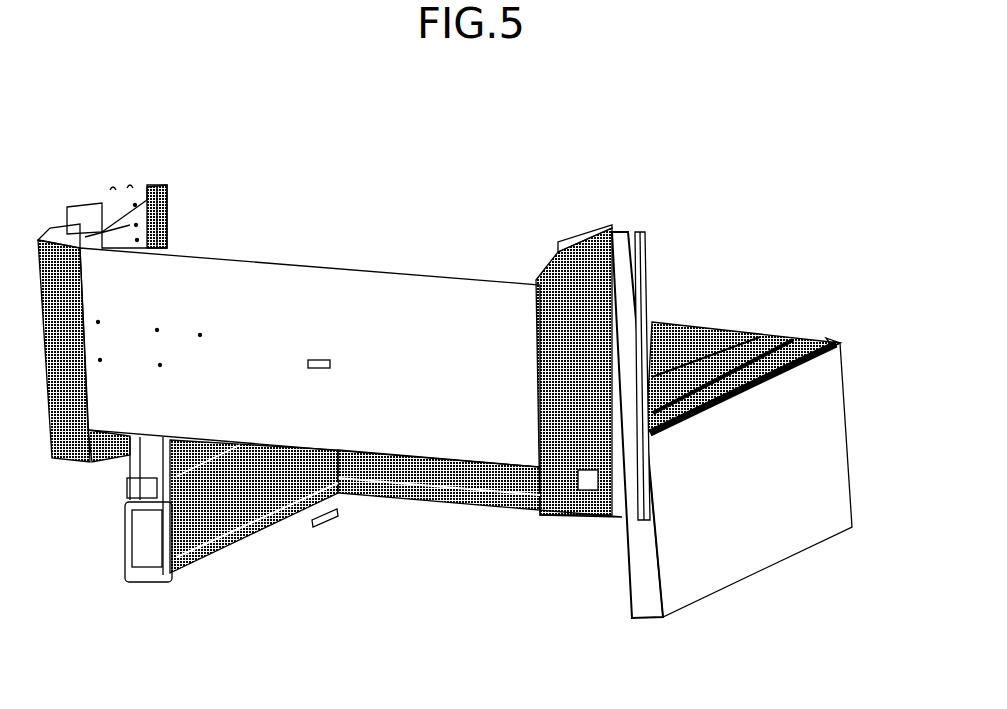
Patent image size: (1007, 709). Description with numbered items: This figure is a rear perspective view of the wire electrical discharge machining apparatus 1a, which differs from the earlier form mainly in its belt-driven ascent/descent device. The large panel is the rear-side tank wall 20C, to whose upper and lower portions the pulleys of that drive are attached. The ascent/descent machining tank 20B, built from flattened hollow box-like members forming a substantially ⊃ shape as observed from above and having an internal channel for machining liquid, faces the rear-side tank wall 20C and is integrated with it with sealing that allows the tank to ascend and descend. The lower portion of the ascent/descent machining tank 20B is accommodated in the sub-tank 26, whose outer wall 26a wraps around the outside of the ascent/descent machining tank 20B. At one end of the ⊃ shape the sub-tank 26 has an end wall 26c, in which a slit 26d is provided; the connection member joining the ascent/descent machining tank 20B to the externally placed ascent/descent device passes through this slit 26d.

The wire electrical discharge machining apparatus 1a is at (592, 146).
The rear-side tank wall 20C is at (380, 265).
The ascent/descent machining tank 20B is at (735, 333).
The sub-tank 26 is at (847, 400).
The outer wall 26a is at (823, 500).
The end wall 26c is at (643, 572).
The slit 26d is at (642, 460).